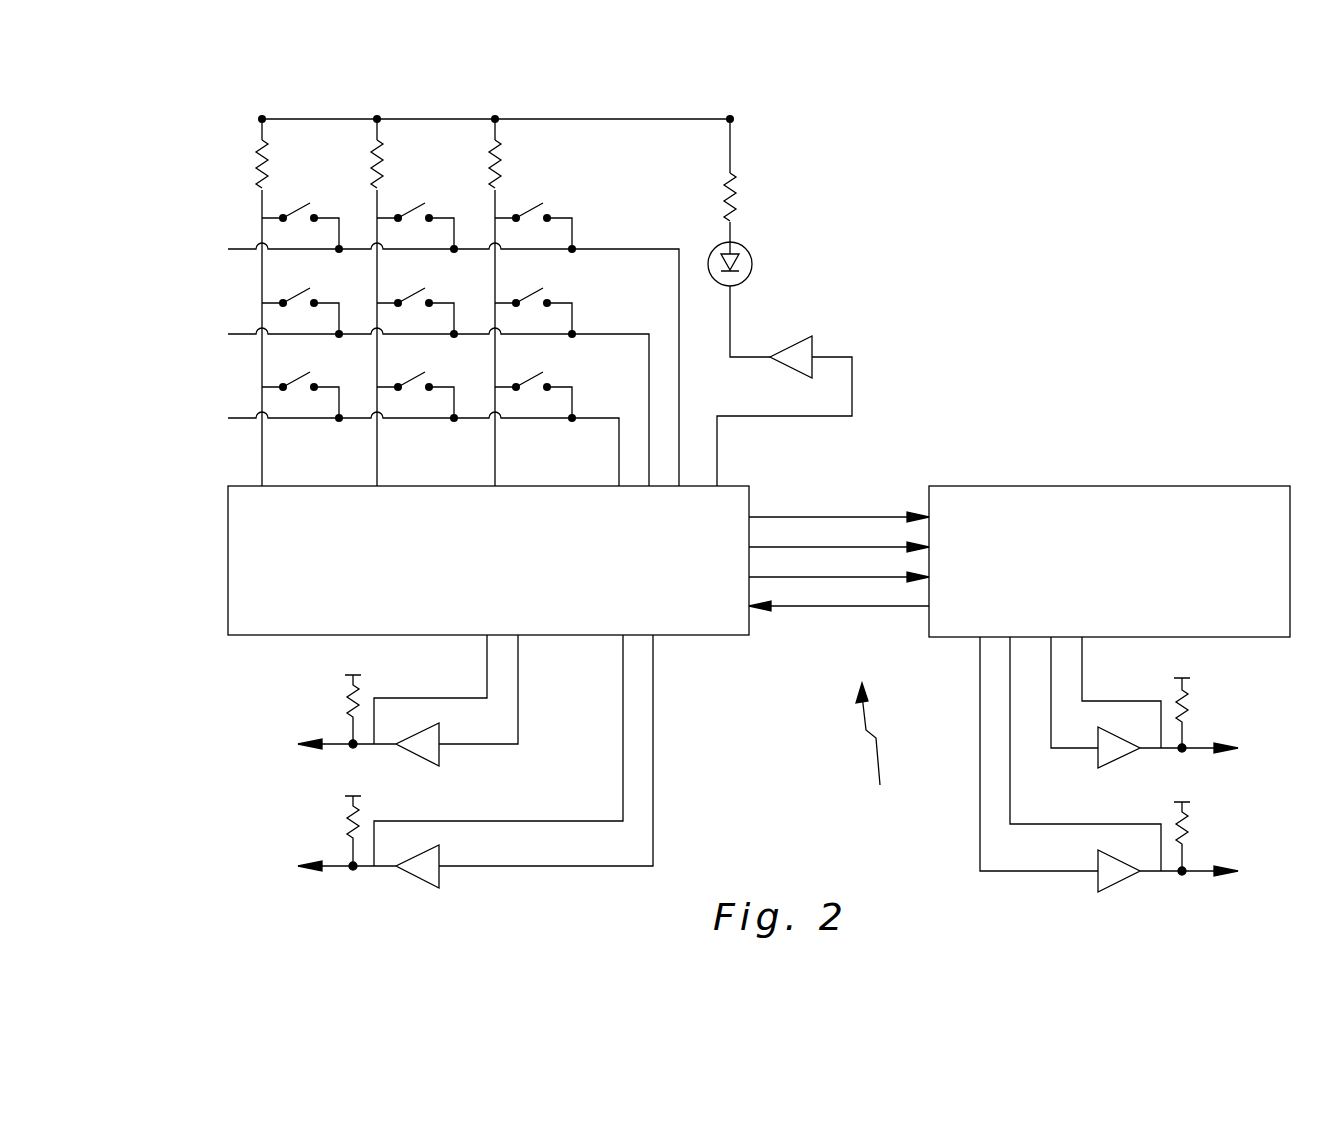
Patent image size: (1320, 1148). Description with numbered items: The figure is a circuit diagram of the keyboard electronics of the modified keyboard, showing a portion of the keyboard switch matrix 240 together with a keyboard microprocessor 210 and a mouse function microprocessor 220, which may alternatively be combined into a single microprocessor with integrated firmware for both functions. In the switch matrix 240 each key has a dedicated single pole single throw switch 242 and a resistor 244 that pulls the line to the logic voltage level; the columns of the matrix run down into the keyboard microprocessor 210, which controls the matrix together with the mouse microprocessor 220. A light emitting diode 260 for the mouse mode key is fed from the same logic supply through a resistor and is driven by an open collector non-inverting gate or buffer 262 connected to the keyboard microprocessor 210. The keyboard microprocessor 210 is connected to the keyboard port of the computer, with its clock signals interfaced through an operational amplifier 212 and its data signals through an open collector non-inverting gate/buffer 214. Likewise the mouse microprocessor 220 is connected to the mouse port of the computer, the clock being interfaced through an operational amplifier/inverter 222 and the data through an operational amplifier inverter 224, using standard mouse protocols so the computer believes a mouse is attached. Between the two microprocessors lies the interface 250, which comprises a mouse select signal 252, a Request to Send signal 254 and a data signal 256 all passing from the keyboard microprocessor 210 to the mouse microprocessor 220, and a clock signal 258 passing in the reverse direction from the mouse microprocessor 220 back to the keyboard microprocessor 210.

The keyboard microprocessor 210 is at (697, 636).
The operational amplifier 212 is at (438, 753).
The open collector non-inverting gate/buffer 214 is at (438, 877).
The mouse function microprocessor 220 is at (1134, 500).
The operational amplifier/inverter 222 is at (1098, 755).
The operational amplifier inverter 224 is at (1098, 878).
The switch matrix 240 is at (261, 284).
The SPST switch 242 is at (310, 204).
The resistor 244 is at (258, 170).
The interface 250 is at (878, 747).
The mouse select signal 252 is at (826, 547).
The Request to Send signal 254 is at (870, 513).
The data signal 256 is at (812, 576).
The clock signal 258 is at (873, 607).
The light emitting diode 260 is at (752, 264).
The open collector non-inverting gate or buffer 262 is at (810, 343).